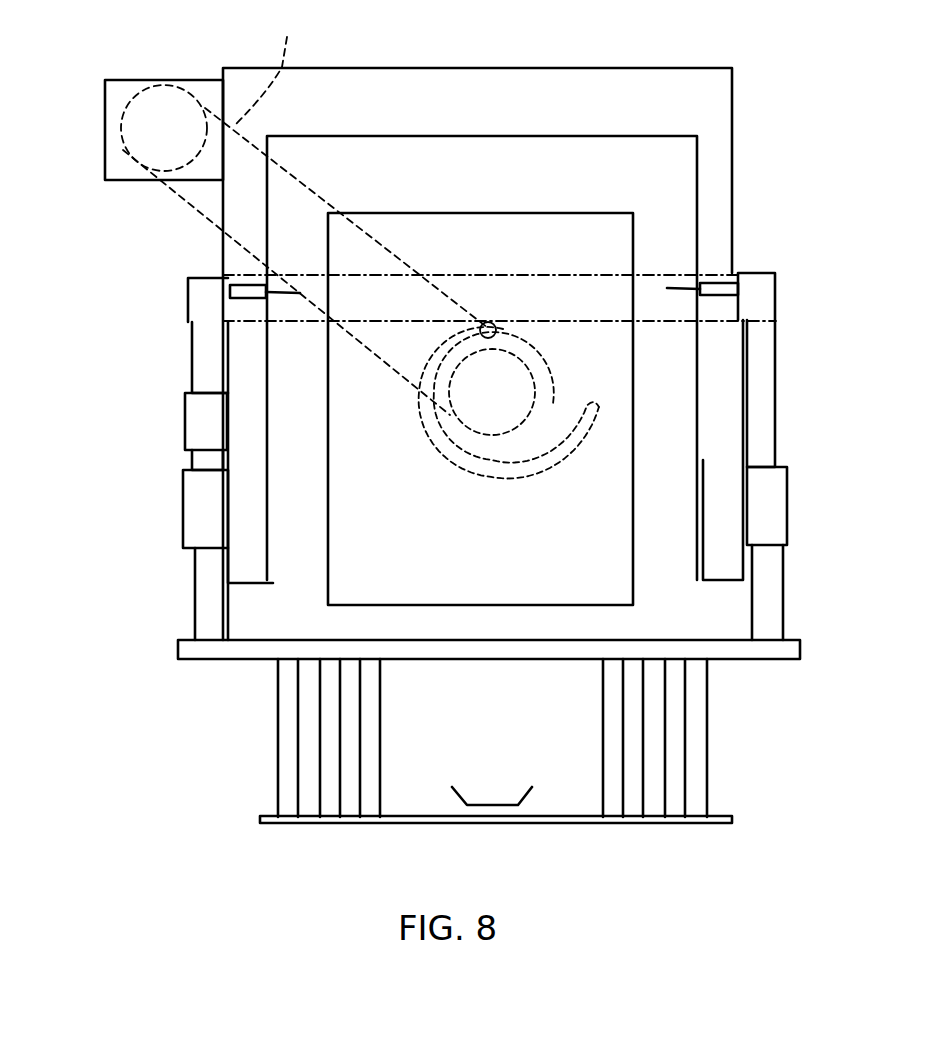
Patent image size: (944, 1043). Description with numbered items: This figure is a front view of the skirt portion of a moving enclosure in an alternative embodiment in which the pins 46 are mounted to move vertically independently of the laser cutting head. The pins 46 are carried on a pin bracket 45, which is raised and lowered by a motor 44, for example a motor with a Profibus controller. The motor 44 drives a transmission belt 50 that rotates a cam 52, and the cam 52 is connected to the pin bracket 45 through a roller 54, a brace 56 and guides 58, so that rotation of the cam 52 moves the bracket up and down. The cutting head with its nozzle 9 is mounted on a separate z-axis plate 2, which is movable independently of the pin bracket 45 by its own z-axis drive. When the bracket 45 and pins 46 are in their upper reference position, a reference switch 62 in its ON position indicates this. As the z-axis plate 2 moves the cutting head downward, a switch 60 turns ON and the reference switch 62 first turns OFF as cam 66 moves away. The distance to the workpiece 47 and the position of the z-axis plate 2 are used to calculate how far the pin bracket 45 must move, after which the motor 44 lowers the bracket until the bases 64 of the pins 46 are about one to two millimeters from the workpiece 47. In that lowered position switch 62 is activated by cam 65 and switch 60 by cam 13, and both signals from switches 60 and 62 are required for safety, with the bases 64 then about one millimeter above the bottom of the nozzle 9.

The z-axis plate 2 is at (595, 247).
The nozzle 9 is at (498, 805).
The cam 13 is at (763, 293).
The motor 44 is at (117, 98).
The pin bracket 45 is at (697, 647).
The pins 46 is at (713, 737).
The workpiece 47 is at (272, 815).
The transmission belt 50 is at (270, 66).
The cam 52 is at (457, 435).
The roller 54 is at (490, 322).
The brace 56 is at (603, 307).
The guides 58 is at (203, 372).
The switch 60 is at (728, 283).
The reference switch 62 is at (221, 286).
The bases 64 is at (716, 805).
The cam 65 is at (198, 297).
The cam 66 is at (203, 423).